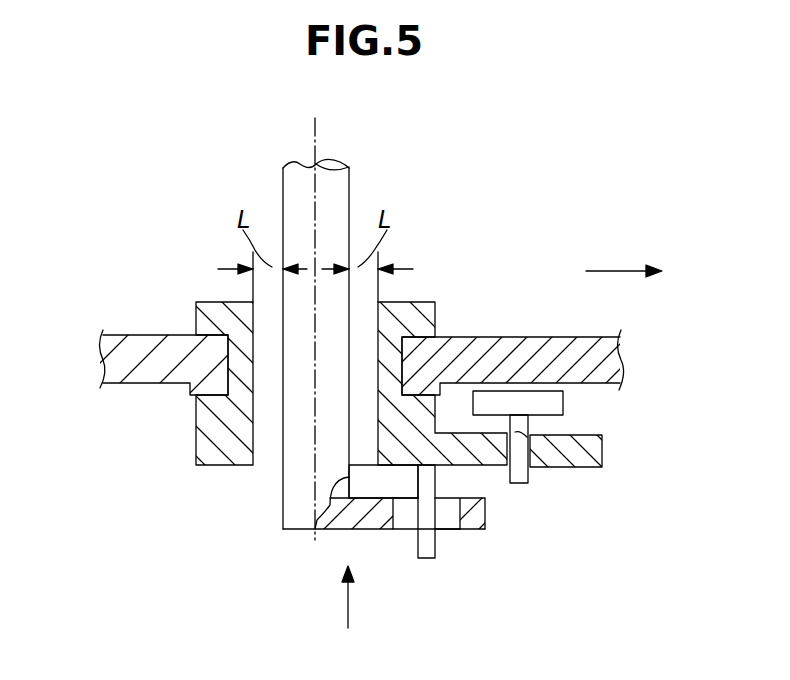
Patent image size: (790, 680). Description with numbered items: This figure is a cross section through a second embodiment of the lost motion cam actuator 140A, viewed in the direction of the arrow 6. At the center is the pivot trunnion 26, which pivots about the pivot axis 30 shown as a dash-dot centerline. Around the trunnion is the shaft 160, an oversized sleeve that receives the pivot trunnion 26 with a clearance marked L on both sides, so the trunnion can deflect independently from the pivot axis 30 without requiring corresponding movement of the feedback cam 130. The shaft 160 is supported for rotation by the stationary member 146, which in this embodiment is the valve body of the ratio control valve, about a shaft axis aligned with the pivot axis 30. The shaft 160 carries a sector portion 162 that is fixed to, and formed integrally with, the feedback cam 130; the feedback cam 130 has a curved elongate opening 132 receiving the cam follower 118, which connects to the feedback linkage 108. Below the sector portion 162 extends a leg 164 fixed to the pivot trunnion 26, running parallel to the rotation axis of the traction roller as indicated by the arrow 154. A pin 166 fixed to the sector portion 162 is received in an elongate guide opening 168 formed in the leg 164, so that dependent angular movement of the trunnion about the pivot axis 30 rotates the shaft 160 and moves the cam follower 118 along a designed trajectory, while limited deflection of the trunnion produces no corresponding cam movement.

The line 6—6 viewing direction 6 is at (348, 603).
The pivot trunnion 26 is at (342, 183).
The pivot axis 30 is at (313, 134).
The feedback linkage 108 is at (567, 403).
The cam follower 118 is at (520, 483).
The feedback cam 130 is at (582, 458).
The curved elongate opening 132 is at (524, 433).
The lost motion cam actuator 140A is at (158, 424).
The stationary member 146 is at (524, 336).
The arrow 154 is at (618, 271).
The shaft 160 is at (212, 302).
The sector portion 162 is at (466, 467).
The leg 164 is at (357, 523).
The pin 166 is at (425, 560).
The elongate guide opening 168 is at (445, 530).